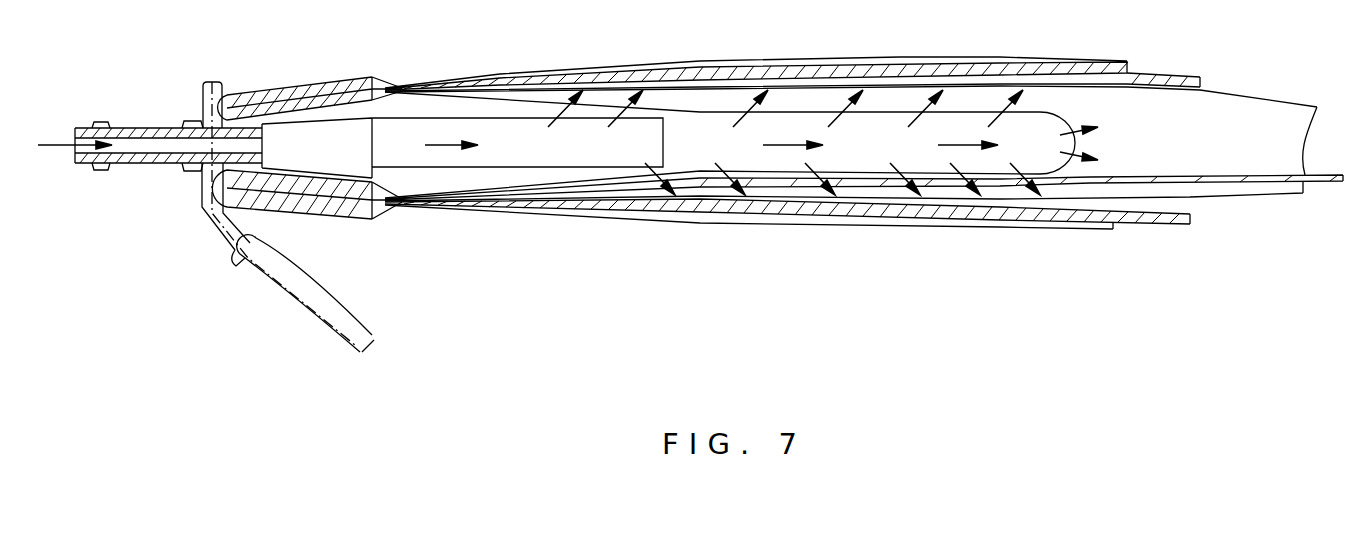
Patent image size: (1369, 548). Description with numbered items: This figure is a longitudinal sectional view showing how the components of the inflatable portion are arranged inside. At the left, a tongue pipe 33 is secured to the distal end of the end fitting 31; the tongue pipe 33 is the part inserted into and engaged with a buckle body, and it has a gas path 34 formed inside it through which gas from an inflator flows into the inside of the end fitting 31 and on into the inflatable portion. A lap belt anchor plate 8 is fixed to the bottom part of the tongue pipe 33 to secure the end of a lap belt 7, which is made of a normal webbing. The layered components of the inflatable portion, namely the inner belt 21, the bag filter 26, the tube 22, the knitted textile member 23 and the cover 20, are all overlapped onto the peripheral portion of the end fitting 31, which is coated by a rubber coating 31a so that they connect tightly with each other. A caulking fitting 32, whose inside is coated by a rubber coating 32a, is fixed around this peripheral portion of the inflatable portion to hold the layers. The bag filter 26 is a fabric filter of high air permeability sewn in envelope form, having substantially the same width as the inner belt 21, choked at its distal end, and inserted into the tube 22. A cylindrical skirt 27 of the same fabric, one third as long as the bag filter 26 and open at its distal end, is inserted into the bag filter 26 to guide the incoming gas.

The lap belt 7 is at (267, 303).
The lap belt anchor plate 8 is at (203, 215).
The cover 20 is at (1113, 61).
The inner belt 21 is at (1327, 182).
The tube 22 is at (1229, 88).
The knitted textile member 23 is at (1168, 74).
The bag filter 26 is at (1058, 195).
The skirt 27 is at (613, 183).
The end fitting 31 is at (348, 120).
The rubber coating 31a is at (374, 194).
The caulking fitting 32 is at (302, 88).
The rubber coating 32a is at (388, 88).
The tongue pipe 33 is at (148, 165).
The gas path 34 is at (143, 125).